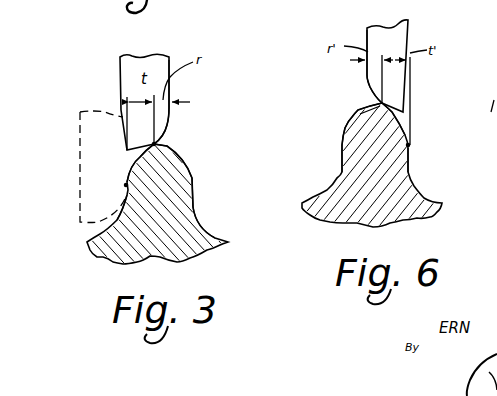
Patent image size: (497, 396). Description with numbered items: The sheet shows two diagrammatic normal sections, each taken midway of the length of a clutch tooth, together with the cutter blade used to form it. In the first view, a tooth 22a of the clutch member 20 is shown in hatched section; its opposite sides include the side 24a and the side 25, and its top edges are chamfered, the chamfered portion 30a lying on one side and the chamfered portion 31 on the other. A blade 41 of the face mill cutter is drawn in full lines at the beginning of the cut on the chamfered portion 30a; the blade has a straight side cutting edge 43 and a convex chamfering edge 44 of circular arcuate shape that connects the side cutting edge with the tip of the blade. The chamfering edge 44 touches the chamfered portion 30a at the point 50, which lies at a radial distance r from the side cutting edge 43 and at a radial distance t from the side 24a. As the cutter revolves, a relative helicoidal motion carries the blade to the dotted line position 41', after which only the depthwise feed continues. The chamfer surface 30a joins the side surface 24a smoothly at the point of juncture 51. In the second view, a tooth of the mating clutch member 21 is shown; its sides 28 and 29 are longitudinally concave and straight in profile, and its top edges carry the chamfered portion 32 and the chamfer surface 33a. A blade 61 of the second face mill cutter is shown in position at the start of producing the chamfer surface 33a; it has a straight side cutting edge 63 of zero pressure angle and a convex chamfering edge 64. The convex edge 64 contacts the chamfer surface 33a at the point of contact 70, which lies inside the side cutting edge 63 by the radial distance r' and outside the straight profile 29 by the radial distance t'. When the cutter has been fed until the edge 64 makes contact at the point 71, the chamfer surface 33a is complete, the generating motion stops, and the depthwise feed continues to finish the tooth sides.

In FIG. 3, the clutch member 20 is at (198, 247).
In FIG. 6, the mating clutch member 21 is at (403, 208).
In FIG. 3, the tooth 22a is at (187, 202).
In FIG. 3, the side of the tooth 24a is at (126, 196).
In FIG. 3, the side of the tooth 25 is at (193, 186).
In FIG. 6, the side of the tooth 28 is at (342, 158).
In FIG. 6, the side of the tooth 29 is at (410, 158).
In FIG. 3, the chamfered portion 30a is at (132, 162).
In FIG. 3, the chamfered portion 31 is at (190, 156).
In FIG. 6, the chamfered portion 32 is at (350, 122).
In FIG. 6, the chamfer surface 33a is at (396, 114).
In FIG. 3, the blade 41 is at (126, 102).
In FIG. 3, the dotted line position of the blade 41' is at (81, 167).
In FIG. 3, the side cutting edge 43 is at (170, 88).
In FIG. 3, the chamfering edge 44 is at (165, 132).
In FIG. 3, the point of contact 50 is at (158, 142).
In FIG. 3, the point of juncture 51 is at (126, 185).
In FIG. 6, the blade 61 is at (400, 33).
In FIG. 6, the side cutting edge 63 is at (367, 32).
In FIG. 6, the chamfering edge 64 is at (380, 103).
In FIG. 6, the point of contact 70 is at (364, 108).
In FIG. 6, the point of contact 71 is at (410, 143).